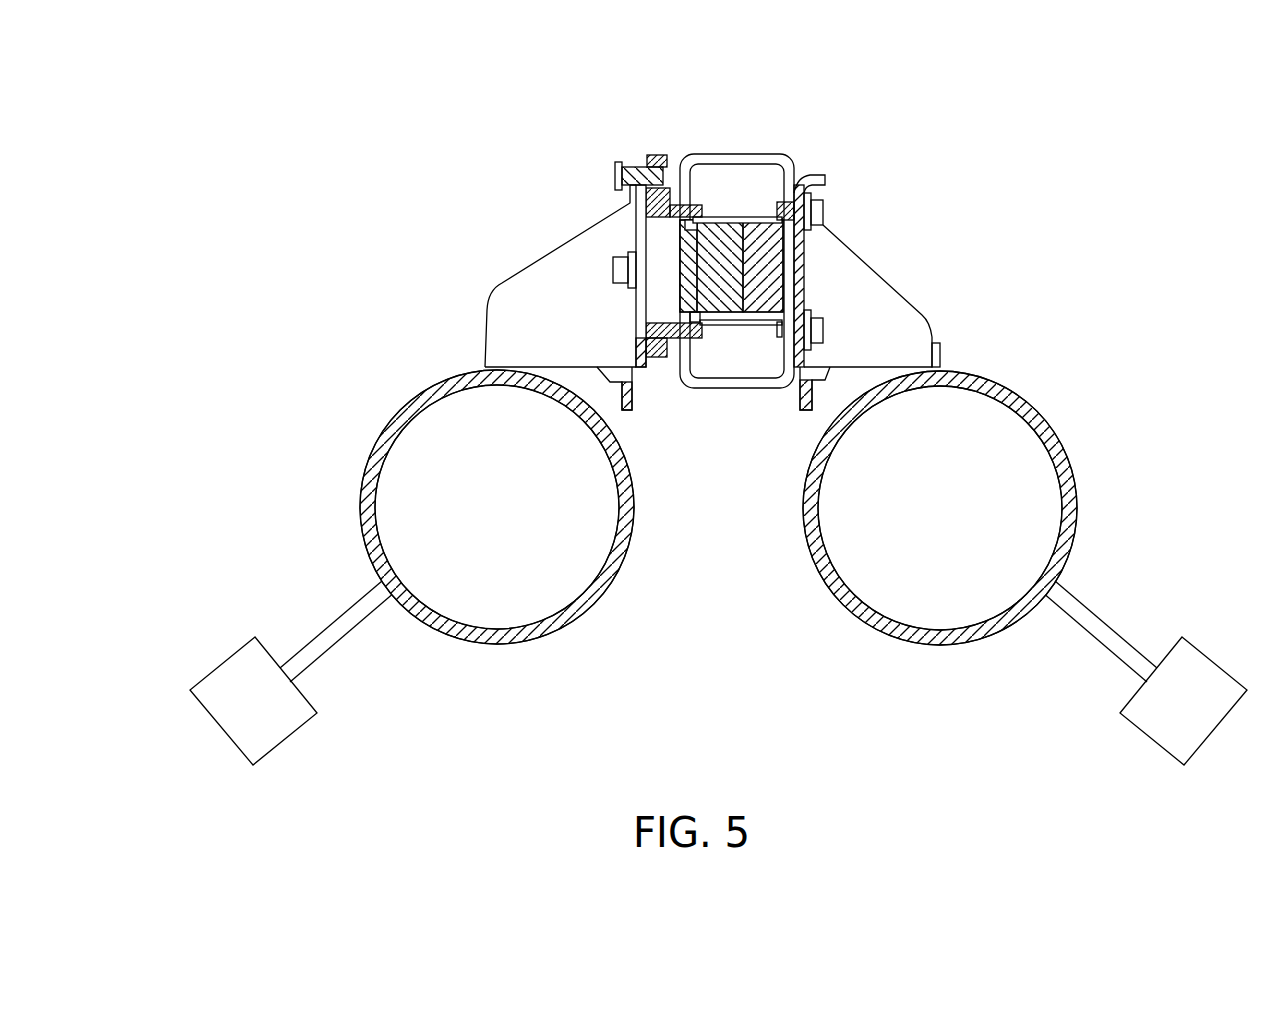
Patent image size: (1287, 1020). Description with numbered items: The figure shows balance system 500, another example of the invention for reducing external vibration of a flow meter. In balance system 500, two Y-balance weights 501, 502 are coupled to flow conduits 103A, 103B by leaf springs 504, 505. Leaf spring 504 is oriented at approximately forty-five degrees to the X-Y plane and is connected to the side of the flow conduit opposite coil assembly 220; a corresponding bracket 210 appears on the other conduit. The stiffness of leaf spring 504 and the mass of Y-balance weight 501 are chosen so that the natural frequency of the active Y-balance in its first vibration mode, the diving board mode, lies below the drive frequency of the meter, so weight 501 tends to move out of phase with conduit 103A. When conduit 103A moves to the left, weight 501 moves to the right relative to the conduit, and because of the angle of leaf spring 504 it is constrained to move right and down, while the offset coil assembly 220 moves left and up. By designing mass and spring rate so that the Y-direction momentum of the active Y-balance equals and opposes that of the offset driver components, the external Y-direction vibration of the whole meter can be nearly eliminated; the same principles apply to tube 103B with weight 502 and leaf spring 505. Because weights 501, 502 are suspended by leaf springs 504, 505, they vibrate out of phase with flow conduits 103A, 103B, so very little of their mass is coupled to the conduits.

The balance system 500 is at (368, 158).
The flow conduit 103A is at (375, 440).
The flow conduit 103B is at (1057, 450).
The right mounting bracket 210 is at (852, 270).
The coil assembly 220 is at (558, 262).
The Y-balance weight 501 is at (265, 722).
The Y-balance weight 502 is at (1148, 722).
The leaf spring 504 is at (360, 625).
The leaf spring 505 is at (1082, 630).